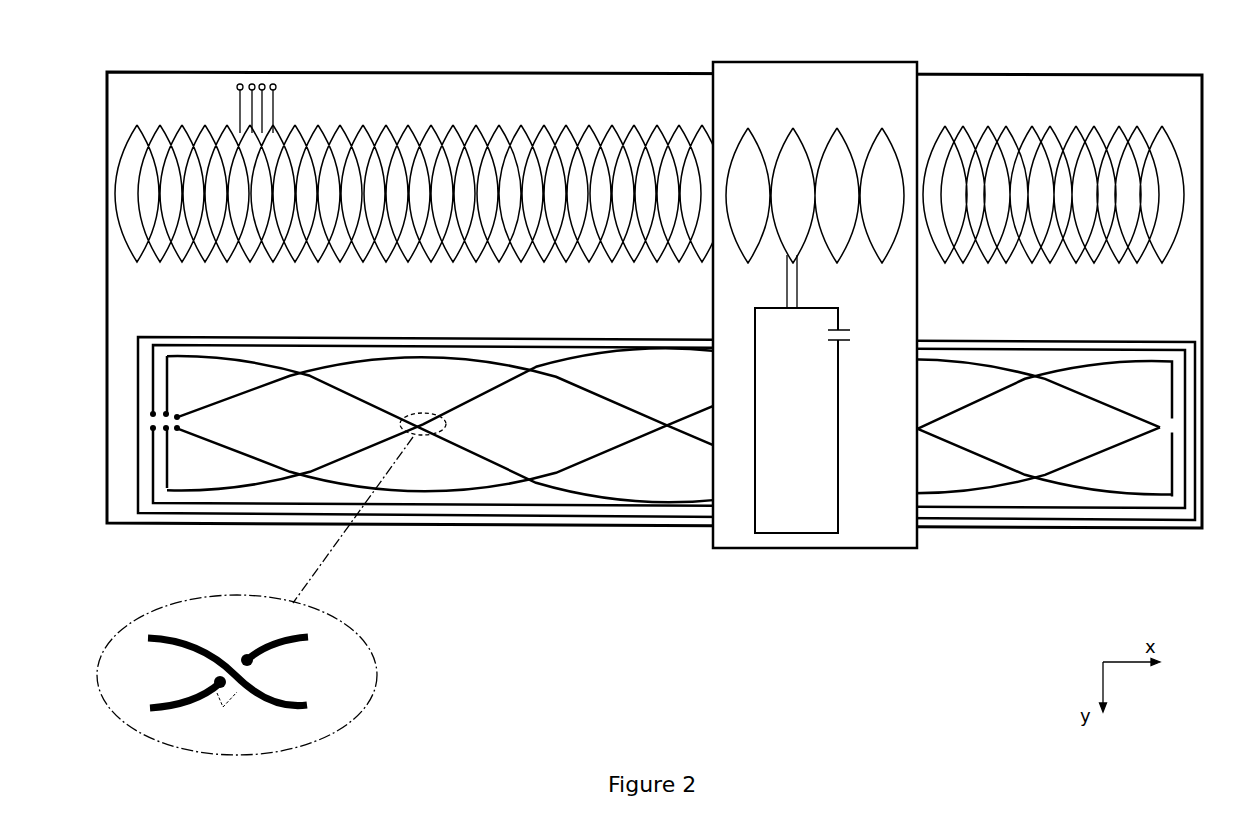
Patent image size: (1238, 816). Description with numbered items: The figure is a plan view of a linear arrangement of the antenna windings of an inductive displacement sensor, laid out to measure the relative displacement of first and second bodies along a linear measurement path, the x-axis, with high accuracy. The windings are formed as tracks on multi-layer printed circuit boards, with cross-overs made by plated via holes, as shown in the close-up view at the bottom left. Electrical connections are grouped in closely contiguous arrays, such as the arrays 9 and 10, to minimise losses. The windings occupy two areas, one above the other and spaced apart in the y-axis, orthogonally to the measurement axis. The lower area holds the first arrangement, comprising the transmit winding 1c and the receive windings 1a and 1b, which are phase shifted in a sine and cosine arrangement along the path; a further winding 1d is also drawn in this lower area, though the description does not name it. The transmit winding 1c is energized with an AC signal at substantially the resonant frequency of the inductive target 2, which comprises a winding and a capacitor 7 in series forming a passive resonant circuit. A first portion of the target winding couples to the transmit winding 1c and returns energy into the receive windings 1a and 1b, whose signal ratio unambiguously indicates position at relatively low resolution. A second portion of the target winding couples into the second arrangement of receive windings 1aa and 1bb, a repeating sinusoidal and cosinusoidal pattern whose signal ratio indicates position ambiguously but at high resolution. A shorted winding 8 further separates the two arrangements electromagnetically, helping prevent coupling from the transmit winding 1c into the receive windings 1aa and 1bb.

The array of electrical connections 10 is at (258, 72).
The array of electrical connections 9 is at (194, 443).
The receive winding 1a is at (561, 494).
The receive winding 1b is at (638, 447).
The transmit winding 1c is at (514, 518).
The conductor 1d is at (994, 505).
The receive winding 1aa is at (609, 272).
The receive winding 1bb is at (639, 272).
The inductive target 2 is at (777, 461).
The capacitor 7 is at (849, 359).
The shorted winding 8 is at (1030, 529).